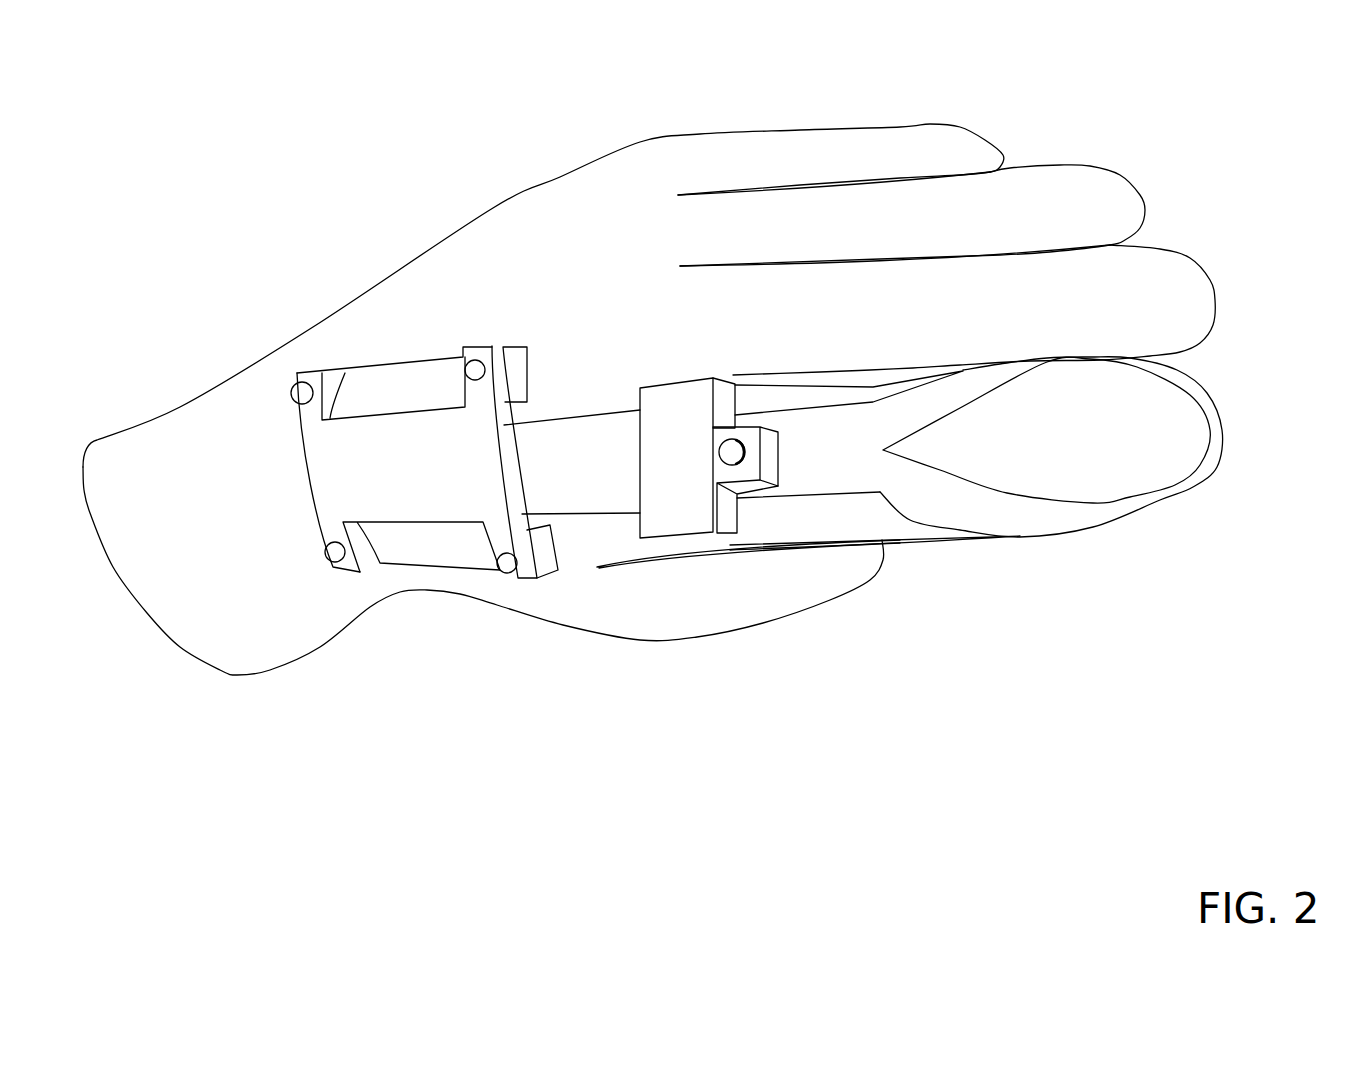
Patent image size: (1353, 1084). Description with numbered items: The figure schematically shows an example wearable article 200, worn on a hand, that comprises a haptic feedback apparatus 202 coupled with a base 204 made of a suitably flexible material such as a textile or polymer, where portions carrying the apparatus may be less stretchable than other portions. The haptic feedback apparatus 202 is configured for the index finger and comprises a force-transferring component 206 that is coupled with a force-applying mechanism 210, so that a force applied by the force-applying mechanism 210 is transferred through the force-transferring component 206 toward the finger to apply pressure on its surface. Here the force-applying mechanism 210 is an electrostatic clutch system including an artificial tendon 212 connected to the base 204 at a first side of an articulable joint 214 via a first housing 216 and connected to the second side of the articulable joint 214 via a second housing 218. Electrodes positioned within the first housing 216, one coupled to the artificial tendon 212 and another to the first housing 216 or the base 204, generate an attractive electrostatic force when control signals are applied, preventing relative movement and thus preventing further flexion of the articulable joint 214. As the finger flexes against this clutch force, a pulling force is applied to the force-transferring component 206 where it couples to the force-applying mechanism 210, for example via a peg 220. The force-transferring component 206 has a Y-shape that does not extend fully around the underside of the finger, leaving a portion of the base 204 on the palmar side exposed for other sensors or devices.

The wearable article 200 is at (408, 108).
The haptic feedback apparatus 202 is at (1026, 571).
The base 204 is at (590, 162).
The force-transferring component 206 is at (838, 442).
The force-applying mechanism 210 is at (630, 341).
The artificial tendon 212 is at (566, 467).
The articulable joint 214 is at (611, 560).
The first housing 216 is at (378, 477).
The second housing 218 is at (663, 462).
The peg 220 is at (746, 460).